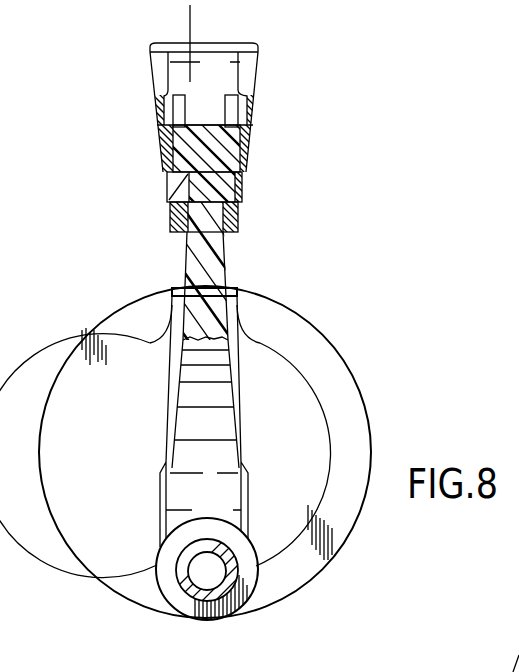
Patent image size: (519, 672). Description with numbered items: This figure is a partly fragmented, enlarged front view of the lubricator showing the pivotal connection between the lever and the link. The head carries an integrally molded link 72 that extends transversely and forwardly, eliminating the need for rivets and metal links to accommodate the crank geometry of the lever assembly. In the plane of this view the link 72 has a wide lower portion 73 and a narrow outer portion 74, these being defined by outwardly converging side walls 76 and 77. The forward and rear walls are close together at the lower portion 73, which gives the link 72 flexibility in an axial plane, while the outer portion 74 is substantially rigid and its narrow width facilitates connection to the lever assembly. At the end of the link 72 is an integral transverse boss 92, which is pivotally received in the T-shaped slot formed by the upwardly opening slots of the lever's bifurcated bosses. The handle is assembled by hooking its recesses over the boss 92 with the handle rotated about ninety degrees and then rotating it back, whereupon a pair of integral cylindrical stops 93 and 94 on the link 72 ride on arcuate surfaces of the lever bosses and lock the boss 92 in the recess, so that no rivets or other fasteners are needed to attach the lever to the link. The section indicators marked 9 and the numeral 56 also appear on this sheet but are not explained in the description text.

The section line 9- 9 is at (197, 13).
The transverse boss 92 is at (228, 141).
The cylindrical stop 94 is at (237, 209).
The cylindrical stop 93 is at (177, 220).
The narrow outer portion 74 is at (212, 258).
The side wall 76 is at (173, 373).
The link 72 is at (238, 358).
The side wall 77 is at (240, 398).
The wide lower portion 73 is at (188, 500).
The adjacent component 56 is at (518, 650).